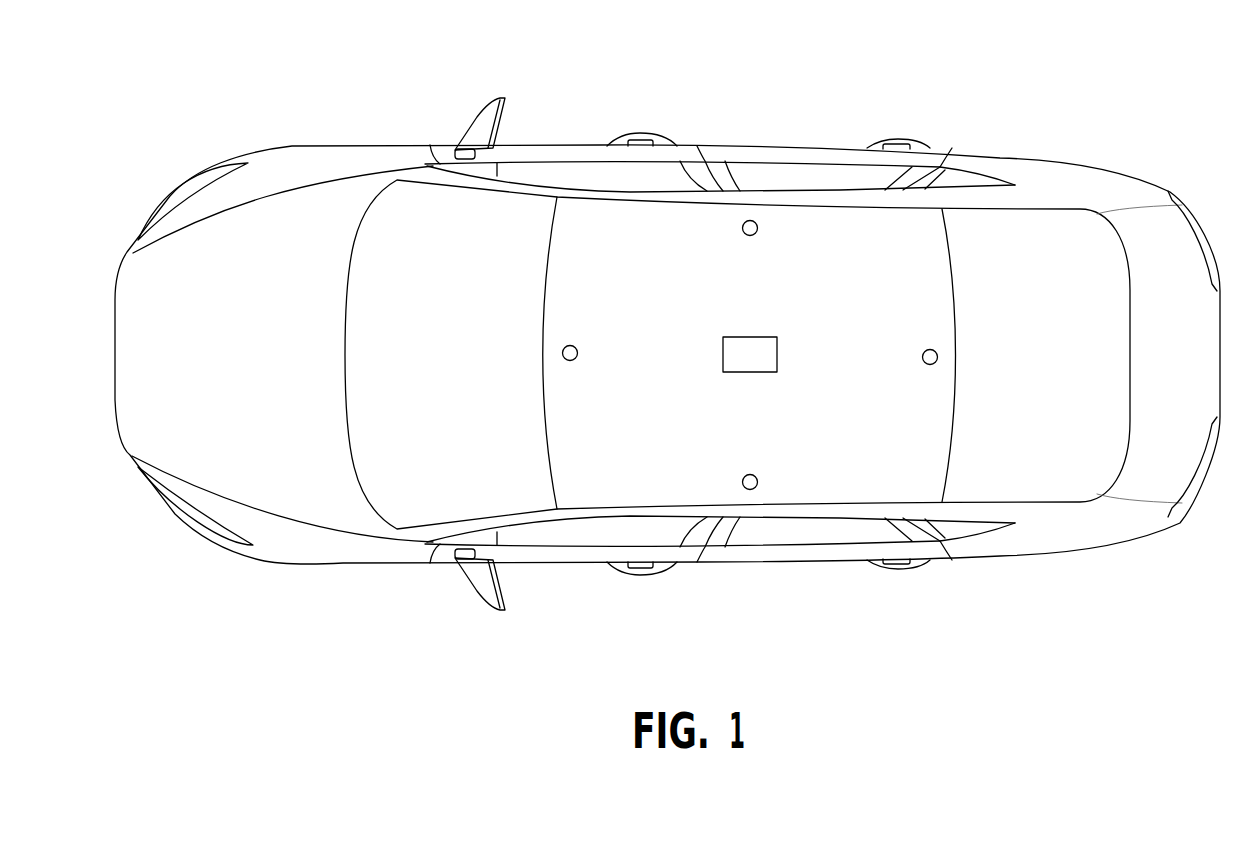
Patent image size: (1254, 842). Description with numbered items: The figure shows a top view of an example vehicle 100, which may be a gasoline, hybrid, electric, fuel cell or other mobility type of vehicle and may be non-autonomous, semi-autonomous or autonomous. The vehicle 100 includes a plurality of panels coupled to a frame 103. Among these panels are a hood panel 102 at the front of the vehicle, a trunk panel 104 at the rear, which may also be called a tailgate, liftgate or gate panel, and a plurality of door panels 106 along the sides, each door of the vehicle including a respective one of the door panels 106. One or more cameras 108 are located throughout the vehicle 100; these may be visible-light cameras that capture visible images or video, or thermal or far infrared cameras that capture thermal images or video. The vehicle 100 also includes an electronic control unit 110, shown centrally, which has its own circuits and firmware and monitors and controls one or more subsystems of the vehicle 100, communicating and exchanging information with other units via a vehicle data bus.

The vehicle 100 is at (331, 160).
The hood panel 102 is at (322, 547).
The frame 103 is at (965, 138).
The trunk panel 104 is at (1128, 182).
The door panels 106 is at (580, 153).
The cameras 108 is at (572, 345).
The electronic control unit 110 is at (767, 367).